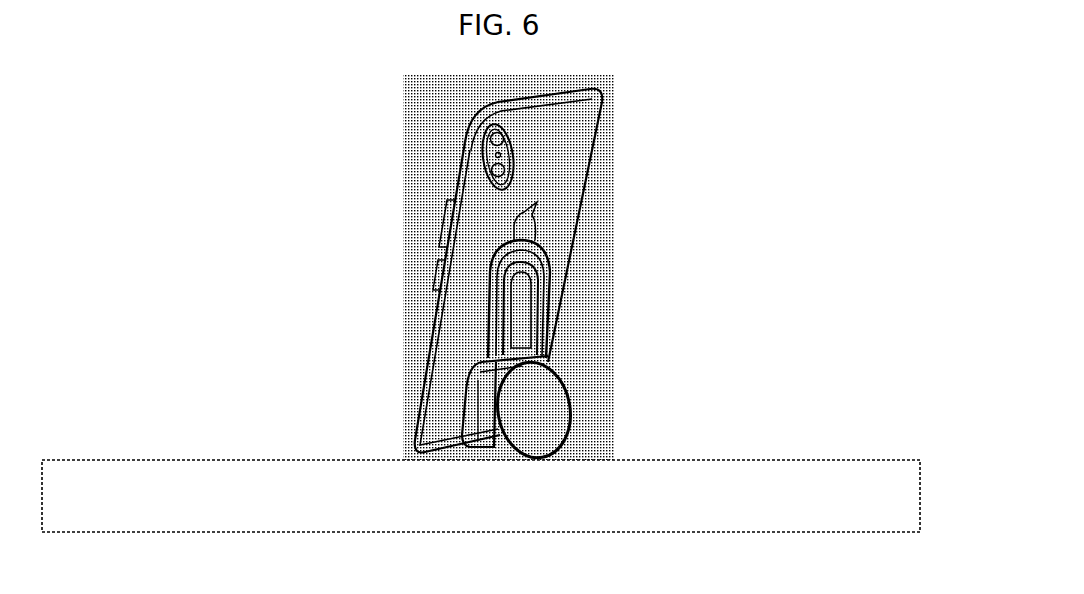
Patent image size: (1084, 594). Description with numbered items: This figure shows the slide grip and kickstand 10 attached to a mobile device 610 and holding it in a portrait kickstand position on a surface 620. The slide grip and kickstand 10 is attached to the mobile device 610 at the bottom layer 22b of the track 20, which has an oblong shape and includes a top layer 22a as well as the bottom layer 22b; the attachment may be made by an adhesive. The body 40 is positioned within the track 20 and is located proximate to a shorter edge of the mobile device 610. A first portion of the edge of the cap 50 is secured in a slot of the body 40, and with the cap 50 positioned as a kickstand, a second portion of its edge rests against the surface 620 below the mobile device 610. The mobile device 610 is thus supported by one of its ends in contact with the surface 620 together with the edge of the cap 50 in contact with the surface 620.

The slide grip and kickstand 10 is at (597, 242).
The track 20 is at (473, 325).
The top layer 22a is at (483, 308).
The bottom layer 22b is at (497, 282).
The body 40 is at (467, 417).
The cap 50 is at (541, 438).
The mobile device 610 is at (487, 240).
The surface 620 is at (498, 506).